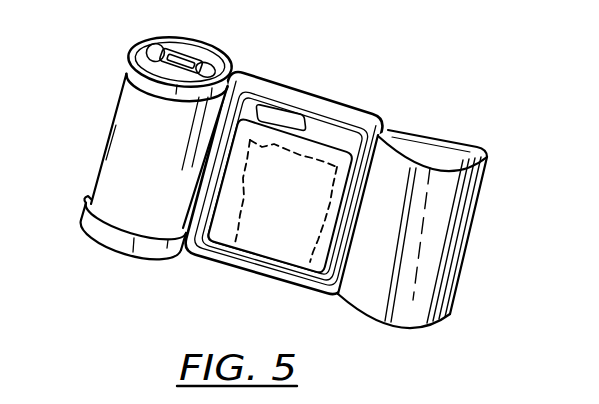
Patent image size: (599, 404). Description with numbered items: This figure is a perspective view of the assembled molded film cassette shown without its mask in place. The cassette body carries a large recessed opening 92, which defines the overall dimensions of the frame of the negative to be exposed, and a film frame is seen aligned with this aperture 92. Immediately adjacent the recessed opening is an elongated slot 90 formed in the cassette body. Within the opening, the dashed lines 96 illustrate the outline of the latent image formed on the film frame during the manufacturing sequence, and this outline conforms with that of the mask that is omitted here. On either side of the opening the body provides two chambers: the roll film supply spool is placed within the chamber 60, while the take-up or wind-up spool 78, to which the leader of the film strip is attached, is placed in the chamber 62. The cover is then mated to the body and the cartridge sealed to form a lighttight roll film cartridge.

The chamber 60 is at (457, 207).
The chamber 62 is at (86, 222).
The wind-up spool 78 is at (155, 41).
The elongated slot 90 is at (279, 116).
The recessed opening 92 is at (270, 246).
The dashed lines 96 is at (243, 199).